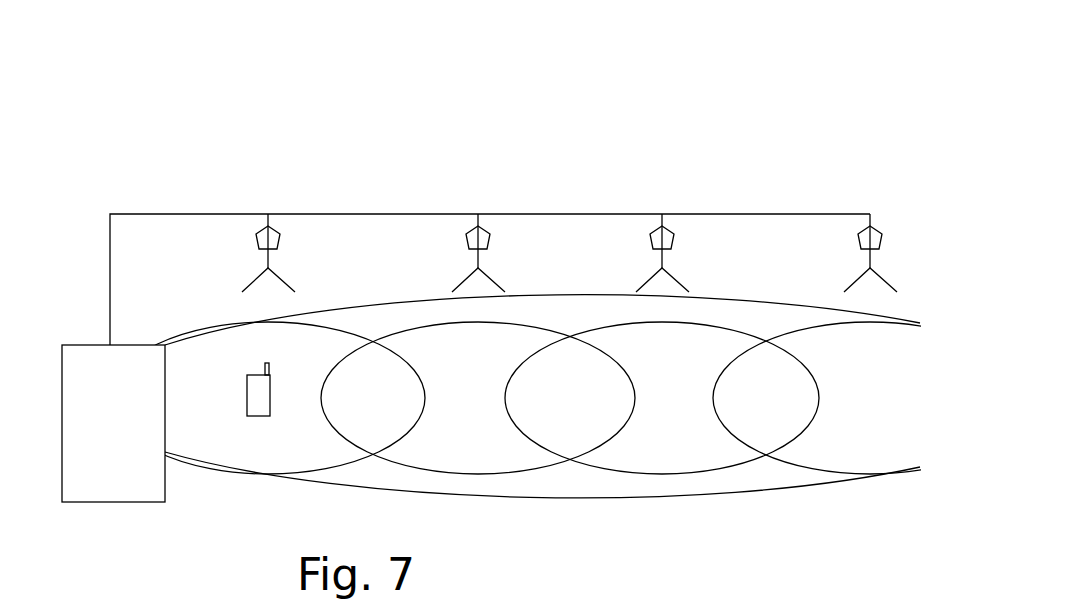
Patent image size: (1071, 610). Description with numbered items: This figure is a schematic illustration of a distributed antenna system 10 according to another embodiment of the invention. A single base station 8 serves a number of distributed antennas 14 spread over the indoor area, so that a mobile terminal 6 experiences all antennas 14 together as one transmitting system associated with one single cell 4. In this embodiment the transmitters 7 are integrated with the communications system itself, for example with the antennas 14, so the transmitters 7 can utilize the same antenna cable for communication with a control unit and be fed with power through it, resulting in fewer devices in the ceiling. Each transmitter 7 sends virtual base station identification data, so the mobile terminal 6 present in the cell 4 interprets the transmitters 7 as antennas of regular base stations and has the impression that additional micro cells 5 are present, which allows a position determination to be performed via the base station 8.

The communication system 10 is at (182, 126).
The base station 8 is at (152, 477).
The transmitter 7 is at (258, 242).
The antenna 14 is at (285, 277).
The micro cell 5 is at (218, 346).
The cell 4 is at (557, 494).
The mobile terminal 6 is at (263, 398).